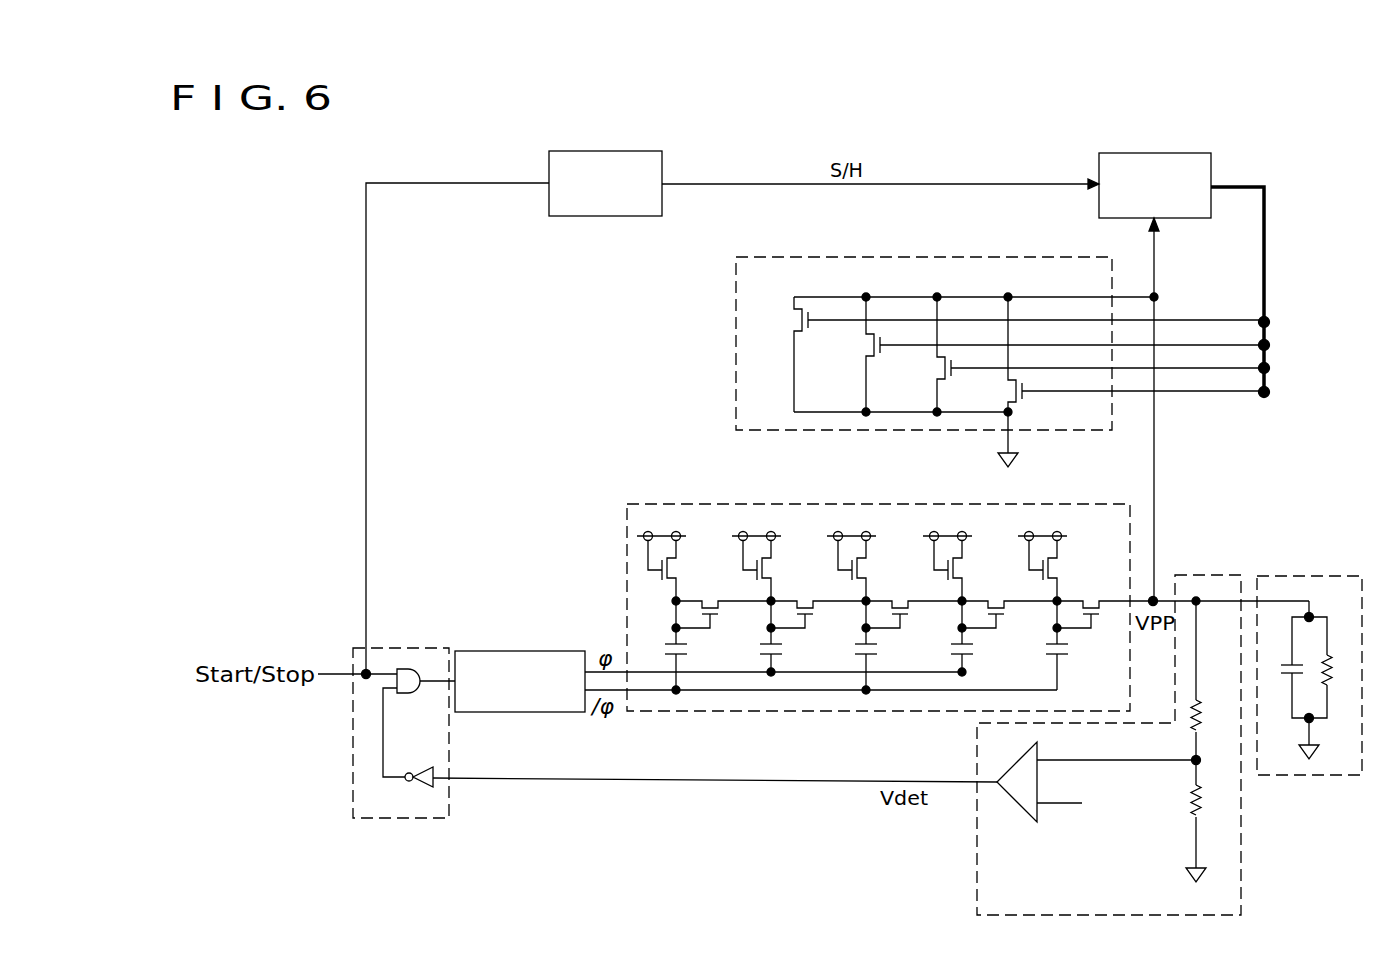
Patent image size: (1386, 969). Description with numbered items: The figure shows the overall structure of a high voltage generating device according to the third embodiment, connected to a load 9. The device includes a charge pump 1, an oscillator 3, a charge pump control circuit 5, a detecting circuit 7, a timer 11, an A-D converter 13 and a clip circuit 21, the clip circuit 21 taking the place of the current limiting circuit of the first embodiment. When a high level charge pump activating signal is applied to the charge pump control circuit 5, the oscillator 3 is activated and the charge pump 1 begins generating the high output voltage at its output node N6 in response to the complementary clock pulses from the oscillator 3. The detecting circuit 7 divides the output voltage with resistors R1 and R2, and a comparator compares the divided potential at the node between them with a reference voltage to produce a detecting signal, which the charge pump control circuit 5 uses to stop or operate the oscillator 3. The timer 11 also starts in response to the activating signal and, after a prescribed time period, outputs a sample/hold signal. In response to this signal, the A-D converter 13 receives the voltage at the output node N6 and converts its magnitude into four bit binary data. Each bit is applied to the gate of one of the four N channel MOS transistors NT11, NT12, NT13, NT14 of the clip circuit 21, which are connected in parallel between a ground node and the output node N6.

The charge pump 1 is at (620, 554).
The oscillator 3 is at (543, 651).
The charge pump control circuit 5 is at (400, 644).
The detecting circuit 7 is at (1109, 713).
The load 9 is at (1322, 572).
The timer 11 is at (629, 151).
The A-D converter 13 is at (1175, 153).
The clip circuit 21 is at (972, 362).
The output node N6 is at (1154, 598).
The N channel MOS transistor NT11 is at (1004, 354).
The N channel MOS transistor NT12 is at (1038, 354).
The N channel MOS transistor NT13 is at (1074, 354).
The N channel MOS transistor NT14 is at (1110, 375).
The resistor R1 is at (1213, 715).
The resistor R2 is at (1213, 800).